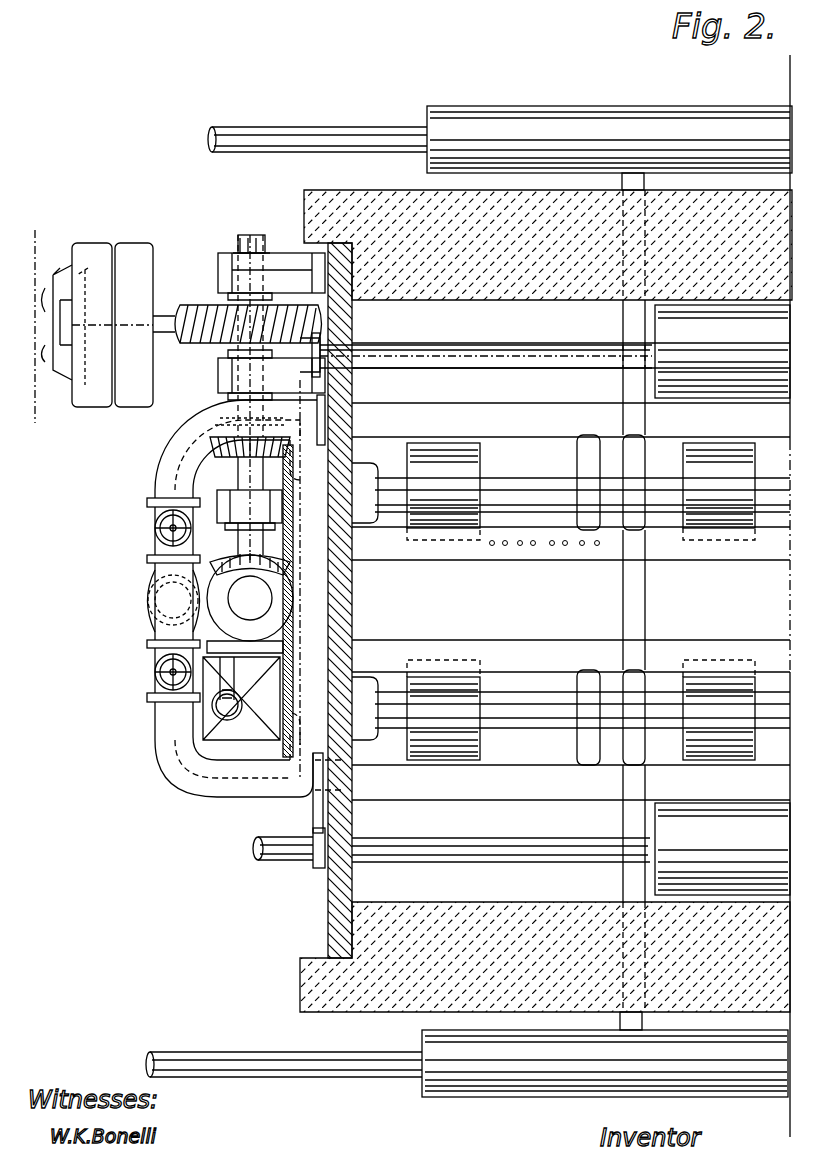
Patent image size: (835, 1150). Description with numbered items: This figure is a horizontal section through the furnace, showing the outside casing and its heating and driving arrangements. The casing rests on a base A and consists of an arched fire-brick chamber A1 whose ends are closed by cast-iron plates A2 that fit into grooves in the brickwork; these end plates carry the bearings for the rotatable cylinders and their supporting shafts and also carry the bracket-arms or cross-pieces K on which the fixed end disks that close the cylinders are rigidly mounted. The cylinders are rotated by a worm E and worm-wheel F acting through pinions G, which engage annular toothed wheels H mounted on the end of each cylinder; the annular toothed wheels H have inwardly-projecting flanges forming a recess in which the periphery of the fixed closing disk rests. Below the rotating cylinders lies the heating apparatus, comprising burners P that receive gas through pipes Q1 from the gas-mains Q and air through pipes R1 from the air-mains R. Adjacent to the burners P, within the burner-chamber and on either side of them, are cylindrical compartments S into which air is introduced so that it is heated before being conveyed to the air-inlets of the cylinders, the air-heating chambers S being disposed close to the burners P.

The base A is at (557, 323).
The arched fire-brick chamber A1 is at (455, 257).
The cast-iron end plates A2 is at (333, 900).
The worm E is at (166, 322).
The worm-wheel F is at (182, 345).
The pinions G is at (233, 441).
The annular toothed wheels H is at (220, 513).
The bracket-arms K is at (268, 704).
The burners P is at (412, 665).
The gas-mains Q is at (165, 717).
The gas pipes Q1 is at (580, 745).
The air-mains R is at (745, 1062).
The air pipes R1 is at (632, 175).
The cylindrical air-heating compartments S is at (763, 335).